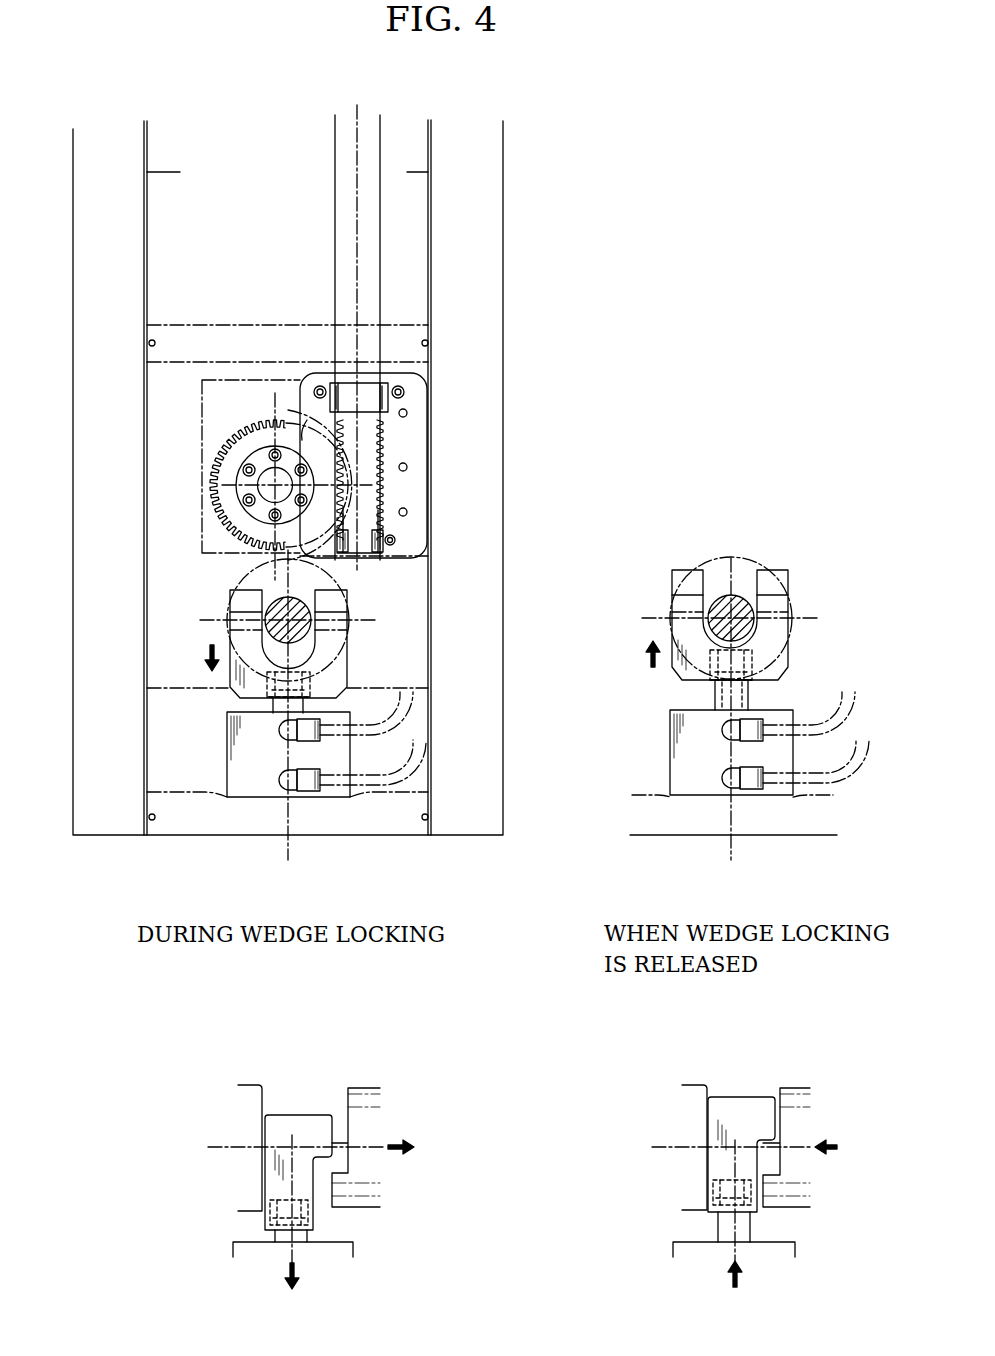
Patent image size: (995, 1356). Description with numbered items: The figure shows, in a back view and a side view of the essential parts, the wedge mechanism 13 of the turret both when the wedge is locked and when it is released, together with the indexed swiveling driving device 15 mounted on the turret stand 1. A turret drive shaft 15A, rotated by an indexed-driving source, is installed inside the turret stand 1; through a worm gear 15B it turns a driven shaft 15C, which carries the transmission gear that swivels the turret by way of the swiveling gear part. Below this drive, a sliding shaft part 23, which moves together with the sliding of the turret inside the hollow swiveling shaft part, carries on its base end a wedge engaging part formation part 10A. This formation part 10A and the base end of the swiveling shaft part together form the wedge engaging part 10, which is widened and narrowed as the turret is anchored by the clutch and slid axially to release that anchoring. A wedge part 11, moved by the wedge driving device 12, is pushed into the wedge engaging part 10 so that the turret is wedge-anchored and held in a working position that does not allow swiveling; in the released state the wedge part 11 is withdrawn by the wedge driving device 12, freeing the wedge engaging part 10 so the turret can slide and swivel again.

The turret stand 1 is at (503, 341).
The wedge engaging part 10 is at (223, 701).
The wedge engaging part formation part 10A is at (240, 583).
The wedge part 11 is at (335, 597).
The wedge driving device 12 is at (230, 757).
The wedge mechanism 13 is at (163, 643).
The indexed swiveling driving device 15 is at (280, 371).
The turret drive shaft 15A is at (335, 160).
The worm gear 15B is at (263, 440).
The driven shaft 15C is at (267, 497).
The sliding shaft part 23 is at (303, 638).